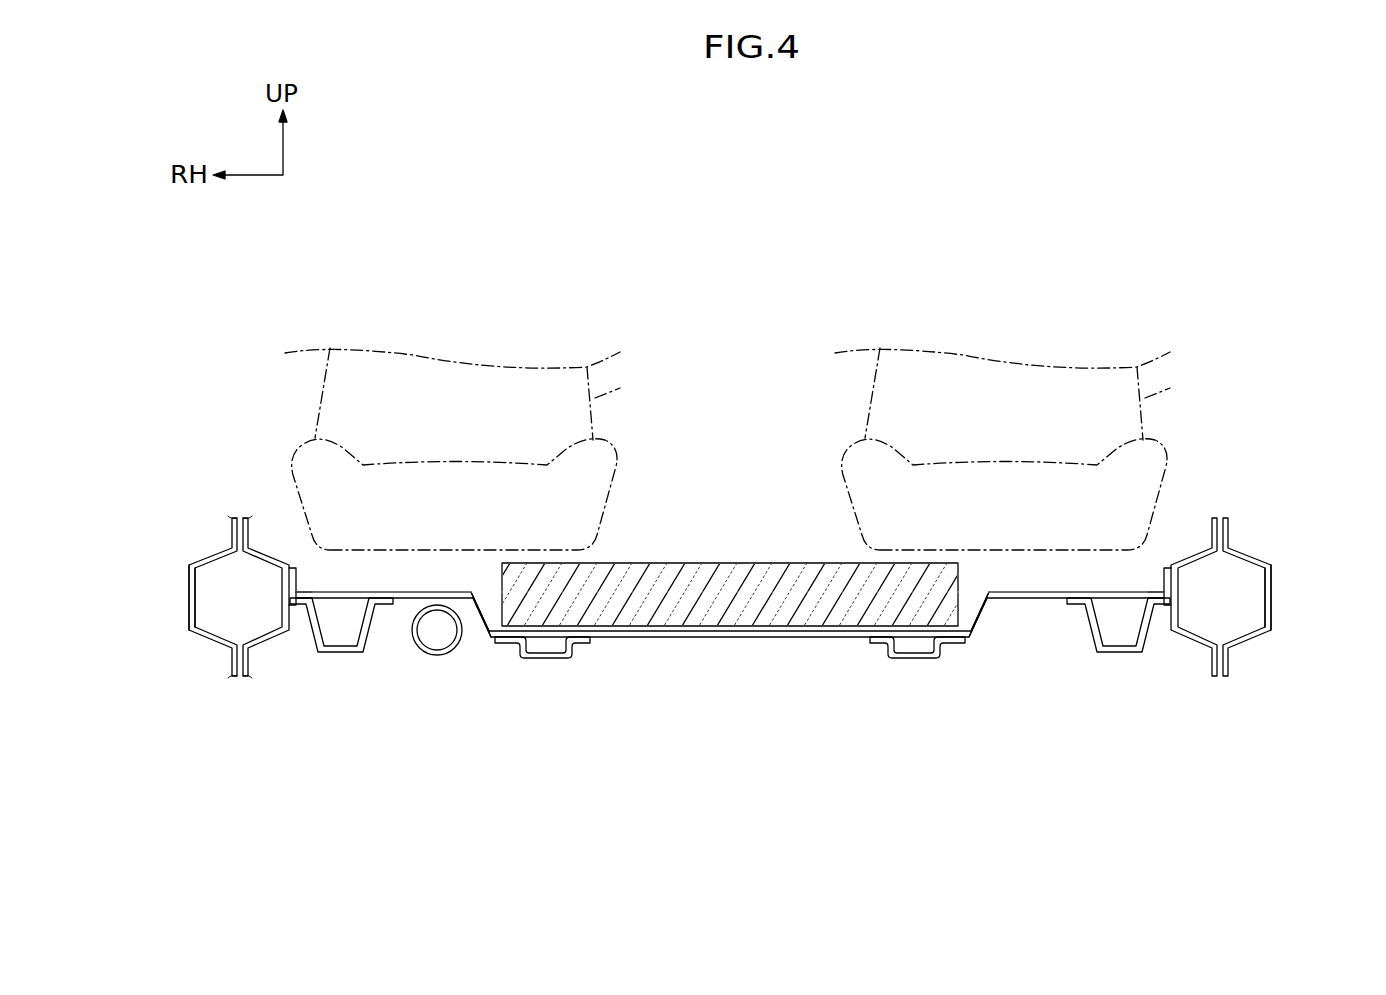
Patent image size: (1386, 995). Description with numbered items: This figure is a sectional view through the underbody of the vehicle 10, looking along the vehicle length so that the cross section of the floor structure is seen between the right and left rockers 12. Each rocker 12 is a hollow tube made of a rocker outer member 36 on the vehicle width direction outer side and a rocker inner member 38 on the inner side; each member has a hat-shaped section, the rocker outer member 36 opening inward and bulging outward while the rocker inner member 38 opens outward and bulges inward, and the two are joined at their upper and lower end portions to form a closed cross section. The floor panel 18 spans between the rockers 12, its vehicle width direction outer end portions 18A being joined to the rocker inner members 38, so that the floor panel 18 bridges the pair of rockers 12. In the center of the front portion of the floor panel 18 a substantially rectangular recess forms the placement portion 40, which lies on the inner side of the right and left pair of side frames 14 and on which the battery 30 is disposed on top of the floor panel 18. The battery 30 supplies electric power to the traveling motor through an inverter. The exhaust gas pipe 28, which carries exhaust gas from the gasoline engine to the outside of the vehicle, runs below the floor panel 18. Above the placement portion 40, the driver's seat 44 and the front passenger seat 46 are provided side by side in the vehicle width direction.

The vehicle 10 is at (691, 686).
The rocker 12 is at (209, 550).
The side frame 14 is at (345, 655).
The floor panel 18 is at (1028, 600).
The vehicle width direction outer end portion 18A is at (296, 588).
The exhaust gas pipe 28 is at (441, 655).
The battery 30 is at (797, 610).
The rocker outer member 36 is at (190, 562).
The rocker inner member 38 is at (288, 568).
The placement portion 40 is at (969, 608).
The driver's seat 44 is at (620, 387).
The front passenger seat 46 is at (1170, 387).